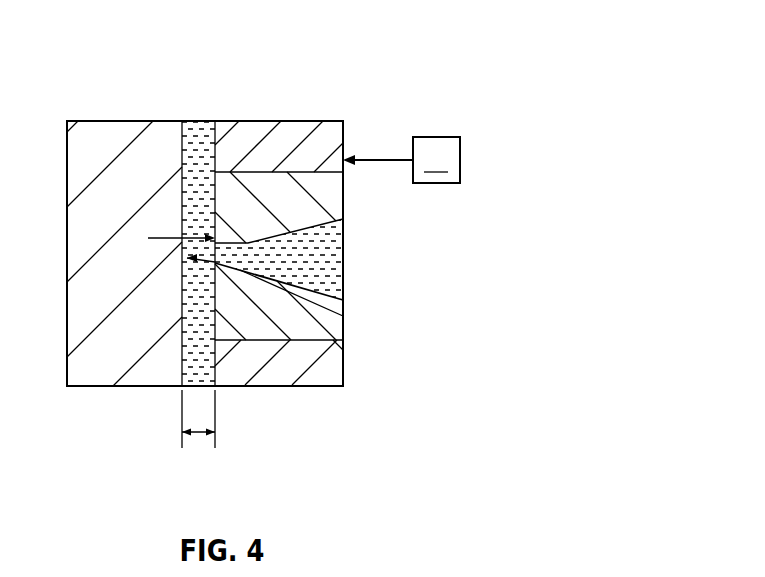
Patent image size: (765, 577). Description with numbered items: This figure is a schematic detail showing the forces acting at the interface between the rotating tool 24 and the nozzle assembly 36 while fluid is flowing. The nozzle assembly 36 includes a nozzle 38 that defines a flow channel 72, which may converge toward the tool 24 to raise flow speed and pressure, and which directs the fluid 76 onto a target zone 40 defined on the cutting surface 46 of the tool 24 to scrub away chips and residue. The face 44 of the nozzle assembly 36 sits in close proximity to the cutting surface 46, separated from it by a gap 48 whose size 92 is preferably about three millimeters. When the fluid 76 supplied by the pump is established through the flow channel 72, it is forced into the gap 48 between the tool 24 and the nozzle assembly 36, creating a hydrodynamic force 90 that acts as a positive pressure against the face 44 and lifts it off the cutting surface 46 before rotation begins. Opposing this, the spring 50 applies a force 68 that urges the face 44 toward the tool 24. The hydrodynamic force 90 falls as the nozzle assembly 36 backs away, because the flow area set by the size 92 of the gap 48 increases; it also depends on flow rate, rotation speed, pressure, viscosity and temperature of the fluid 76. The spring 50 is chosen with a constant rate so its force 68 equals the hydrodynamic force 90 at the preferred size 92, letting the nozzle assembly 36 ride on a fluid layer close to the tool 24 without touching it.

The tool 24 is at (85, 391).
The nozzle assembly 36 is at (267, 117).
The nozzle 38 is at (335, 188).
The target zone 40 is at (272, 262).
The face 44 is at (203, 190).
The cutting surface 46 is at (204, 130).
The gap 48 is at (197, 350).
The spring 50 is at (436, 160).
The force 68 is at (377, 160).
The flow channel 72 is at (327, 293).
The fluid 76 is at (333, 310).
The hydrodynamic force 90 is at (170, 238).
The size 92 is at (193, 435).